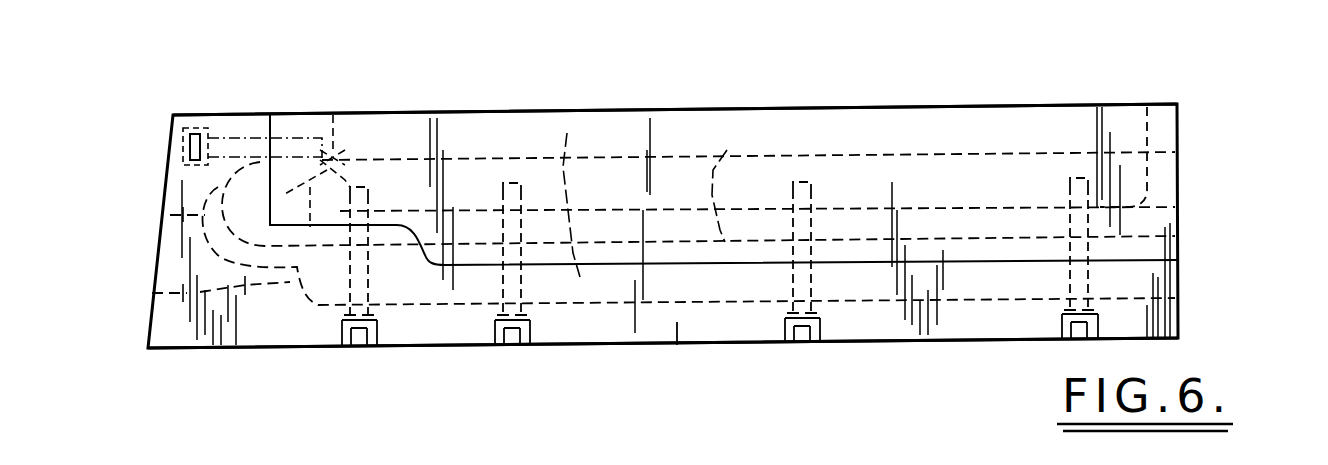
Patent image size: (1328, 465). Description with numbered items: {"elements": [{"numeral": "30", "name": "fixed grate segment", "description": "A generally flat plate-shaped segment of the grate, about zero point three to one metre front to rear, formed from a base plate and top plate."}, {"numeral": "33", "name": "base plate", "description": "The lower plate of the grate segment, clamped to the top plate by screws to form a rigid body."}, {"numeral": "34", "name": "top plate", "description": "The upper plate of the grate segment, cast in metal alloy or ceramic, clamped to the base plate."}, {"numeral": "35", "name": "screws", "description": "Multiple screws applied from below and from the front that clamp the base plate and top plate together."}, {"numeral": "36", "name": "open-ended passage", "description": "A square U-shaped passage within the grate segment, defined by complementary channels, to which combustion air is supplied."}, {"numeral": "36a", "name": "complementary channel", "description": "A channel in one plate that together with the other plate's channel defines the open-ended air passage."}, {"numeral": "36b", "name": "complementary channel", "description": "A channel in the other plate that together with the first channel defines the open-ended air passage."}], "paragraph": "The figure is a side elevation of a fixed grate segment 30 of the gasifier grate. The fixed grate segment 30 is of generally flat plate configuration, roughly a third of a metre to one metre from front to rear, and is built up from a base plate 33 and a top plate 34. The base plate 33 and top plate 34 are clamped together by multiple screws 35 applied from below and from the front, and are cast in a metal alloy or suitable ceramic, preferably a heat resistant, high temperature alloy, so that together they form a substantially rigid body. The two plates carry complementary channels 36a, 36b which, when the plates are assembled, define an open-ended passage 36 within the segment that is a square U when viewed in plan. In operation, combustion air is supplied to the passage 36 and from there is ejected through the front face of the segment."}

The track assembly body 30 is at (1184, 171).
The bottom rail 33 is at (676, 346).
The top rail 34 is at (960, 108).
The mounting clamps 35 is at (225, 147).
The guide channel 36 is at (333, 125).
The guide channel first portion 36a is at (567, 133).
The guide channel second portion 36b is at (727, 150).